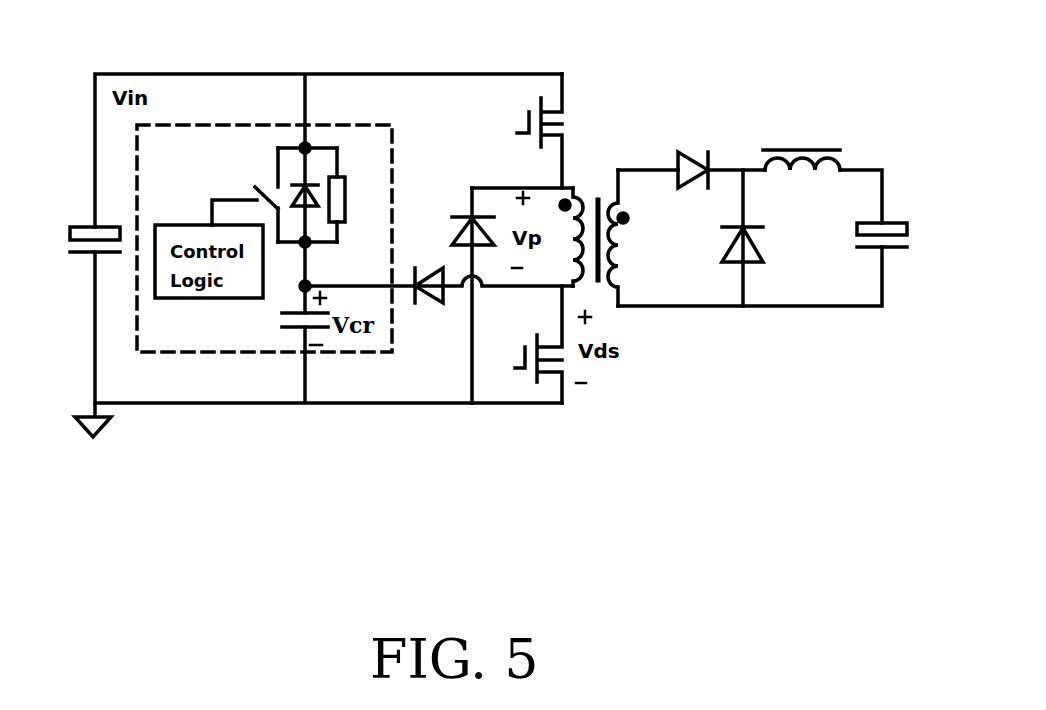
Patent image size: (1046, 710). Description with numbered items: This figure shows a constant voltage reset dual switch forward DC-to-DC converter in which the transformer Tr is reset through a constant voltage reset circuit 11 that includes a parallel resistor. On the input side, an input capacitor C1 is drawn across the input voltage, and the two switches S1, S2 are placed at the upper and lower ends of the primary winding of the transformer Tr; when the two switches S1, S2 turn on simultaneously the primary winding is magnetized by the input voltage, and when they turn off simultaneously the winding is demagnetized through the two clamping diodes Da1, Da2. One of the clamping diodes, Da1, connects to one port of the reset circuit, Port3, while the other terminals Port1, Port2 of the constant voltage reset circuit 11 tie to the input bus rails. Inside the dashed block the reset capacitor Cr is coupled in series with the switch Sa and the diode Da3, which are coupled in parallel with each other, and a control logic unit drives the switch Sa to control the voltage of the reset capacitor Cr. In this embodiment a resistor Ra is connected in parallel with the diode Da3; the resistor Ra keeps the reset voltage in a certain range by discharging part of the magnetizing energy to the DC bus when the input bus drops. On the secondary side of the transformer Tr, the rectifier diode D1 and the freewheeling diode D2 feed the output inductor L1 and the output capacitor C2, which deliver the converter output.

The constant voltage reset circuit 11 is at (350, 123).
The input capacitor C1 is at (80, 258).
The output capacitor C2 is at (884, 254).
The reset capacitor Cr is at (277, 327).
The switch Sa is at (243, 195).
The resistor Ra is at (356, 195).
The clamping diode Da1 is at (397, 290).
The clamping diode Da2 is at (449, 292).
The diode Da3 is at (324, 233).
The switch S1 is at (512, 131).
The switch S2 is at (523, 344).
The transformer Tr is at (594, 222).
The output rectifier diode D1 is at (687, 148).
The freewheeling diode D2 is at (715, 238).
The output inductor L1 is at (801, 143).
The port 1 Port1 is at (300, 93).
The port 2 Port2 is at (303, 372).
The port 3 Port3 is at (366, 378).